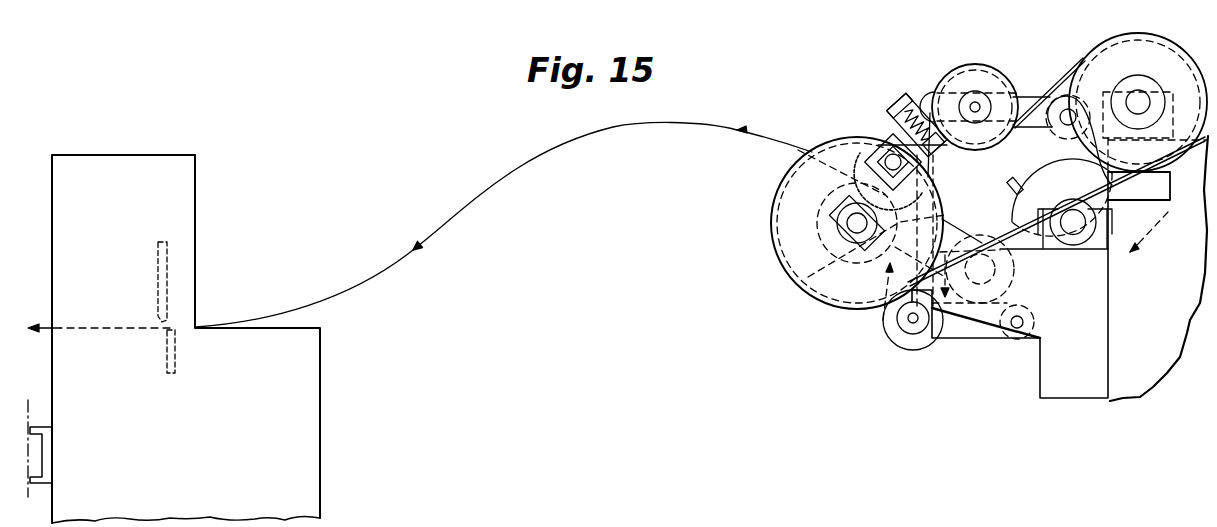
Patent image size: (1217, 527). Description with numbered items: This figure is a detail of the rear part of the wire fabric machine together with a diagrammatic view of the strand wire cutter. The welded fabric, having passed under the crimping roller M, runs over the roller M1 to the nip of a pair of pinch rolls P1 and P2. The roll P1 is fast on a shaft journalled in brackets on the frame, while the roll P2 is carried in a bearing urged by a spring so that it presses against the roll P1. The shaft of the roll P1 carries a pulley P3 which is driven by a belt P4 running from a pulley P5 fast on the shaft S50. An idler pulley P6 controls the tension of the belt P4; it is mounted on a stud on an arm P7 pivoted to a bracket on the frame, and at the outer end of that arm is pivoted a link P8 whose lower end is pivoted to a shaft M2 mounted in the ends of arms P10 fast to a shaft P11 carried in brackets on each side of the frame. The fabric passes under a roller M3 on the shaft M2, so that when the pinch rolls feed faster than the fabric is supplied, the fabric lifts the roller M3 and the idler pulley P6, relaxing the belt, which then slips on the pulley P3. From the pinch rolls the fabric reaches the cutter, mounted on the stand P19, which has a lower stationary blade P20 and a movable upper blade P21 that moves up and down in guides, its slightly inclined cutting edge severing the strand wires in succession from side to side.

The pinch roll P1 is at (806, 283).
The pinch roll P2 is at (873, 130).
The pulley P3 is at (770, 216).
The belt P4 is at (1020, 248).
The pulley P5 is at (1113, 60).
The idler pulley P6 is at (975, 67).
The arm P7 is at (1027, 97).
The link P8 is at (930, 162).
The arms P10 is at (967, 328).
The shaft P11 is at (1017, 330).
The stand P19 is at (305, 418).
The lower stationary blade P20 is at (176, 358).
The movable upper blade P21 is at (158, 290).
The roller M is at (1043, 172).
The roller M1 is at (1020, 258).
The shaft M2 is at (910, 322).
The roller M3 is at (920, 349).
The shaft S50 is at (1140, 100).